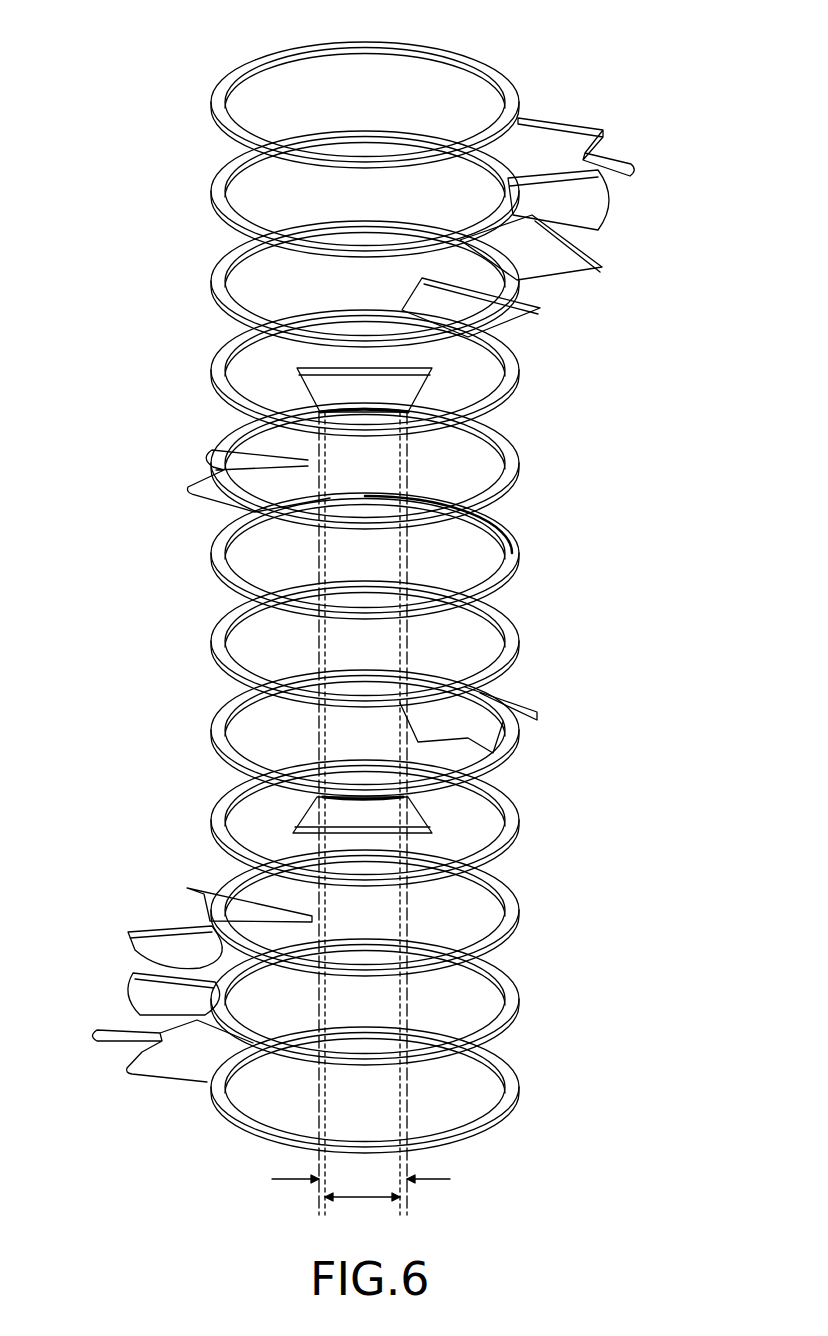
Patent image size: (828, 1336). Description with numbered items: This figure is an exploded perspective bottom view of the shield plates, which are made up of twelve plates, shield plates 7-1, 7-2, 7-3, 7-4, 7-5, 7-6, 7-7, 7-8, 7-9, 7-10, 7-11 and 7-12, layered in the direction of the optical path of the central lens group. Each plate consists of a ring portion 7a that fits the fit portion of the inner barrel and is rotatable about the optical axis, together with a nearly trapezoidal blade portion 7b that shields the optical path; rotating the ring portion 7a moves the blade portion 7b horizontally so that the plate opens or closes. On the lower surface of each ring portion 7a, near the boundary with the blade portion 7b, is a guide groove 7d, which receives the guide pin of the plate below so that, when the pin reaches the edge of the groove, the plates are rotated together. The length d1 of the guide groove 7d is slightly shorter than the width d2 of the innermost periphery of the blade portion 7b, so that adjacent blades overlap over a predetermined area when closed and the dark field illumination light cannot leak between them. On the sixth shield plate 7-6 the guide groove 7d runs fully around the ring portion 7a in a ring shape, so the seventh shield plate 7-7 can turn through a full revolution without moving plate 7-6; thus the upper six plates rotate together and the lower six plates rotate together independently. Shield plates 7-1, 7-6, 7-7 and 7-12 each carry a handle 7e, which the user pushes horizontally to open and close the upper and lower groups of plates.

The shield plate 7-1 is at (303, 86).
The shield plate 7-2 is at (200, 180).
The shield plate 7-3 is at (200, 270).
The shield plate 7-4 is at (200, 355).
The shield plate 7-5 is at (200, 440).
The shield plate 7-6 is at (200, 540).
The shield plate 7-7 is at (538, 648).
The shield plate 7-8 is at (538, 735).
The shield plate 7-9 is at (538, 825).
The shield plate 7-10 is at (538, 913).
The shield plate 7-11 is at (538, 998).
The shield plate 7-12 is at (538, 1098).
The ring portion 7a is at (437, 52).
The blade portion 7b is at (586, 124).
The guide groove 7d is at (518, 118).
The handle 7e is at (636, 166).
The length of the guide groove d1 is at (362, 1209).
The width of the innermost periphery of the blade portion d2 is at (361, 1194).